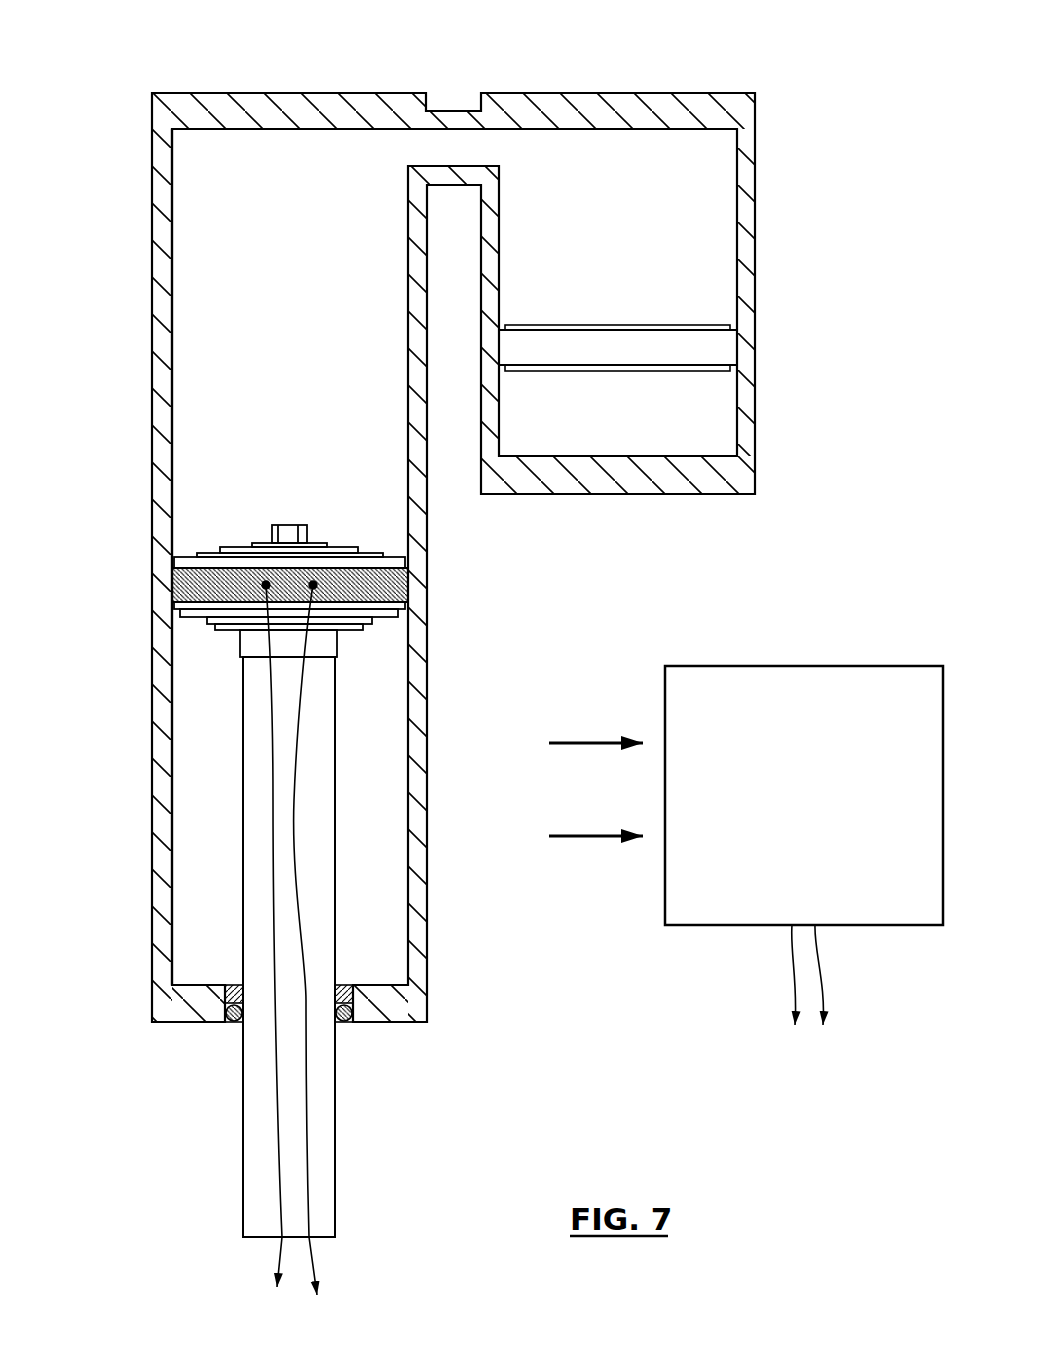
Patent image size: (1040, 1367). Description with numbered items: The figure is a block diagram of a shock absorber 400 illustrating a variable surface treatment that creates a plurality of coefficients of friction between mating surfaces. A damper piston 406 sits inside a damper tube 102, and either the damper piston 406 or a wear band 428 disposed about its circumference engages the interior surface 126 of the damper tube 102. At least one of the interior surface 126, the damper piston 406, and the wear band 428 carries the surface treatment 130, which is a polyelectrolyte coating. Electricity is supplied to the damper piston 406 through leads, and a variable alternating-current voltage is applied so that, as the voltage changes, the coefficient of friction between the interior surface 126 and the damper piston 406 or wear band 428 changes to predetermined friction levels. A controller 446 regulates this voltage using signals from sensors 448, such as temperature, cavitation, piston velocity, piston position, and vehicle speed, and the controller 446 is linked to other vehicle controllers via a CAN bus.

The sensor system 400 is at (398, 647).
The damper tube 102 is at (162, 413).
The interior surface 126 is at (172, 343).
The wear band 428 is at (281, 579).
The surface treatment 130 is at (377, 582).
The damper piston 406 is at (377, 607).
The controller 446 is at (735, 825).
The sensors 448 is at (620, 743).